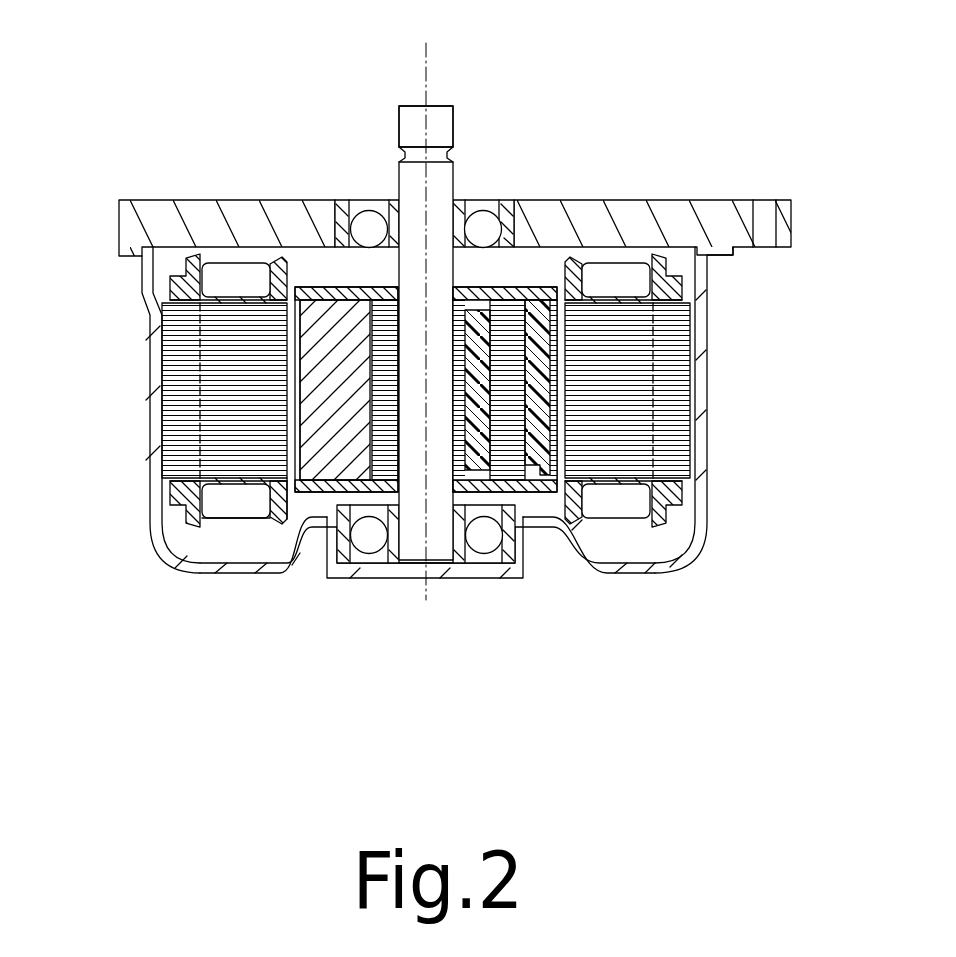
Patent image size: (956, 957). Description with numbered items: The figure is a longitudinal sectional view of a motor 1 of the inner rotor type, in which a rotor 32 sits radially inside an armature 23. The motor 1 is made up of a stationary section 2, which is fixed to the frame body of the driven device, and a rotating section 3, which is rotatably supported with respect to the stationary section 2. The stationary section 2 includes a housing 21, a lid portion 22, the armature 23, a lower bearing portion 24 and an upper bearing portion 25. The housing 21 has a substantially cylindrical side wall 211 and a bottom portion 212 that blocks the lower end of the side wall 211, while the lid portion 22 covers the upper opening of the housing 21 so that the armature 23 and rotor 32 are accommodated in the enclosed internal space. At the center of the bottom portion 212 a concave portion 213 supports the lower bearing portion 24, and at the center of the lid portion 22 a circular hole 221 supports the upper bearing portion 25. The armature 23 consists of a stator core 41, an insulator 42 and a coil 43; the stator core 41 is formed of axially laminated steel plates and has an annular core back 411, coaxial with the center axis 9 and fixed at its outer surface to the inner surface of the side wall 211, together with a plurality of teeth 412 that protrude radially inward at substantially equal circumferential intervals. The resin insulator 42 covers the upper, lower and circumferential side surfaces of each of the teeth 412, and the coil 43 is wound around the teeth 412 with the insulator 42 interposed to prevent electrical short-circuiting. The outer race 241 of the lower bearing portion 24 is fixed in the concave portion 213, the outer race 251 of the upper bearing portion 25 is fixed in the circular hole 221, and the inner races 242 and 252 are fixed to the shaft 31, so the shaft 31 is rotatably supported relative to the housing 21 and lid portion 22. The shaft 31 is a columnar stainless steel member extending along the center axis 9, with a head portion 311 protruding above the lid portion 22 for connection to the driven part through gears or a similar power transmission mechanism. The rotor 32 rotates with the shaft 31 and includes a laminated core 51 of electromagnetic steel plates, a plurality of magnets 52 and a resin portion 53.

The motor 1 is at (197, 166).
The stationary section 2 is at (609, 592).
The housing 21 is at (767, 626).
The side wall 211 is at (697, 475).
The bottom portion 212 is at (637, 568).
The concave portion 213 is at (520, 563).
The lid portion 22 is at (627, 223).
The circular hole 221 is at (338, 236).
The armature 23 is at (178, 666).
The lower bearing portion 24 is at (420, 637).
The outer race 241 is at (348, 549).
The inner race 242 is at (393, 549).
The upper bearing portion 25 is at (390, 112).
The outer race 251 is at (344, 229).
The inner race 252 is at (389, 213).
The rotating section 3 is at (561, 104).
The shaft 31 is at (438, 215).
The head portion 311 is at (443, 125).
The rotor 32 is at (552, 268).
The stator core 41 is at (237, 624).
The core back 411 is at (182, 418).
The teeth 412 is at (248, 418).
The insulator 42 is at (288, 498).
The coil 43 is at (253, 504).
The laminated core 51 is at (507, 397).
The magnets 52 is at (327, 375).
The resin portion 53 is at (537, 334).
The center axis 9 is at (426, 72).